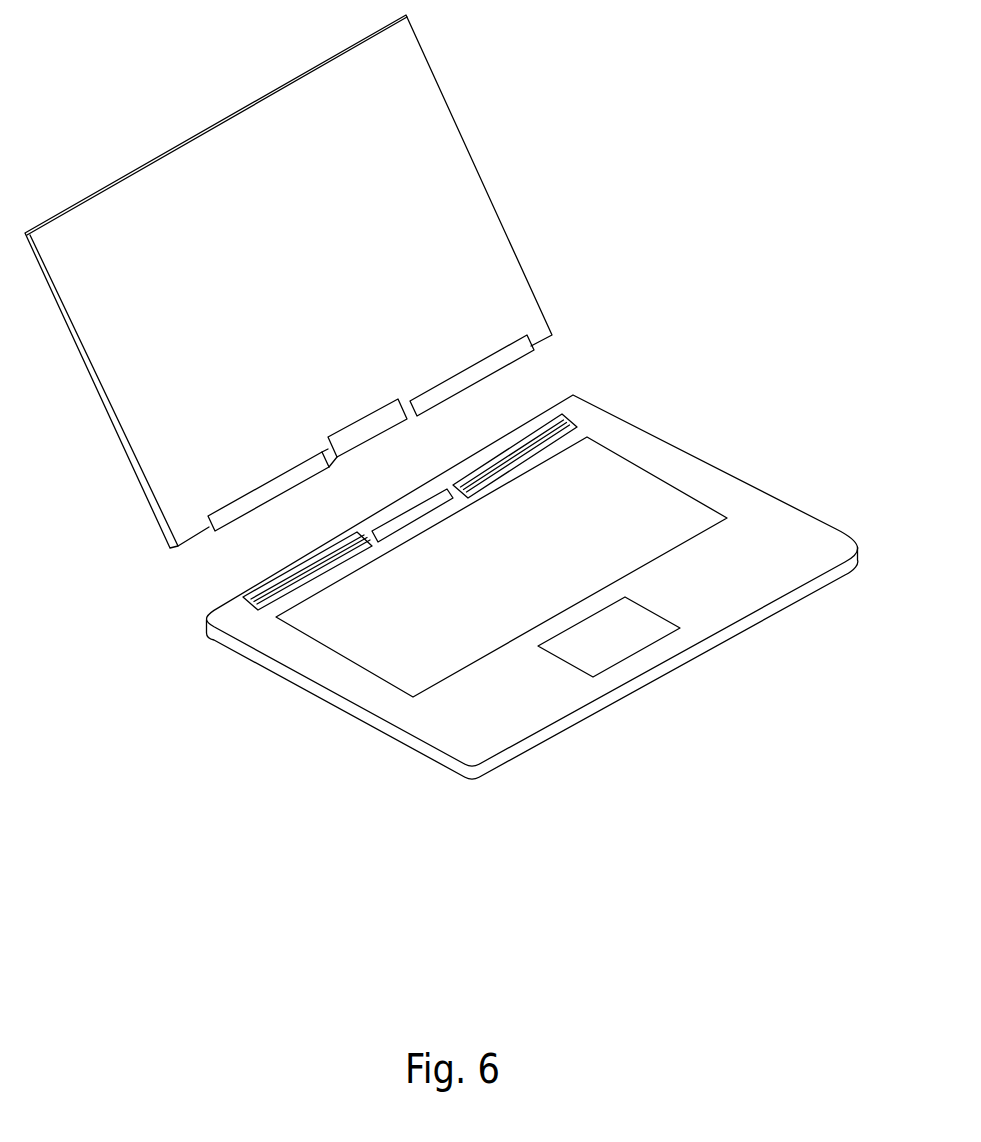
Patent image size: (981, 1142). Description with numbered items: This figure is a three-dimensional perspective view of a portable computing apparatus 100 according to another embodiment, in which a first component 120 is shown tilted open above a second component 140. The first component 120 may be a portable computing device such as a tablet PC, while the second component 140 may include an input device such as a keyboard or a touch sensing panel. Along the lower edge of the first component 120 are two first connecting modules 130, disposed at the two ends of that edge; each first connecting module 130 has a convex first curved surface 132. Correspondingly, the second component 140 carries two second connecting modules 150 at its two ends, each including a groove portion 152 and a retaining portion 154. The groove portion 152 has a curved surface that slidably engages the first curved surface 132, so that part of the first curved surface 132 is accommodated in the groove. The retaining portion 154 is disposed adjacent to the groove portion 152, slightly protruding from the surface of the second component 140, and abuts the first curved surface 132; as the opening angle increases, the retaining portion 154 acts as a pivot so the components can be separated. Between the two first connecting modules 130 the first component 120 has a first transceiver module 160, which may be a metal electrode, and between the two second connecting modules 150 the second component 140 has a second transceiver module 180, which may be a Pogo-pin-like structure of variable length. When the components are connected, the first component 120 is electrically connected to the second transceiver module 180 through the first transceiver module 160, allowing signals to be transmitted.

The portable computing apparatus 100 is at (710, 64).
The first component 120 is at (487, 218).
The first connecting module 130 is at (435, 419).
The first curved surface 132 is at (489, 376).
The second component 140 is at (743, 492).
The second connecting module 150 is at (517, 489).
The groove portion 152 is at (577, 416).
The retaining portion 154 is at (561, 408).
The first transceiver module 160 is at (352, 446).
The second transceiver module 180 is at (403, 510).